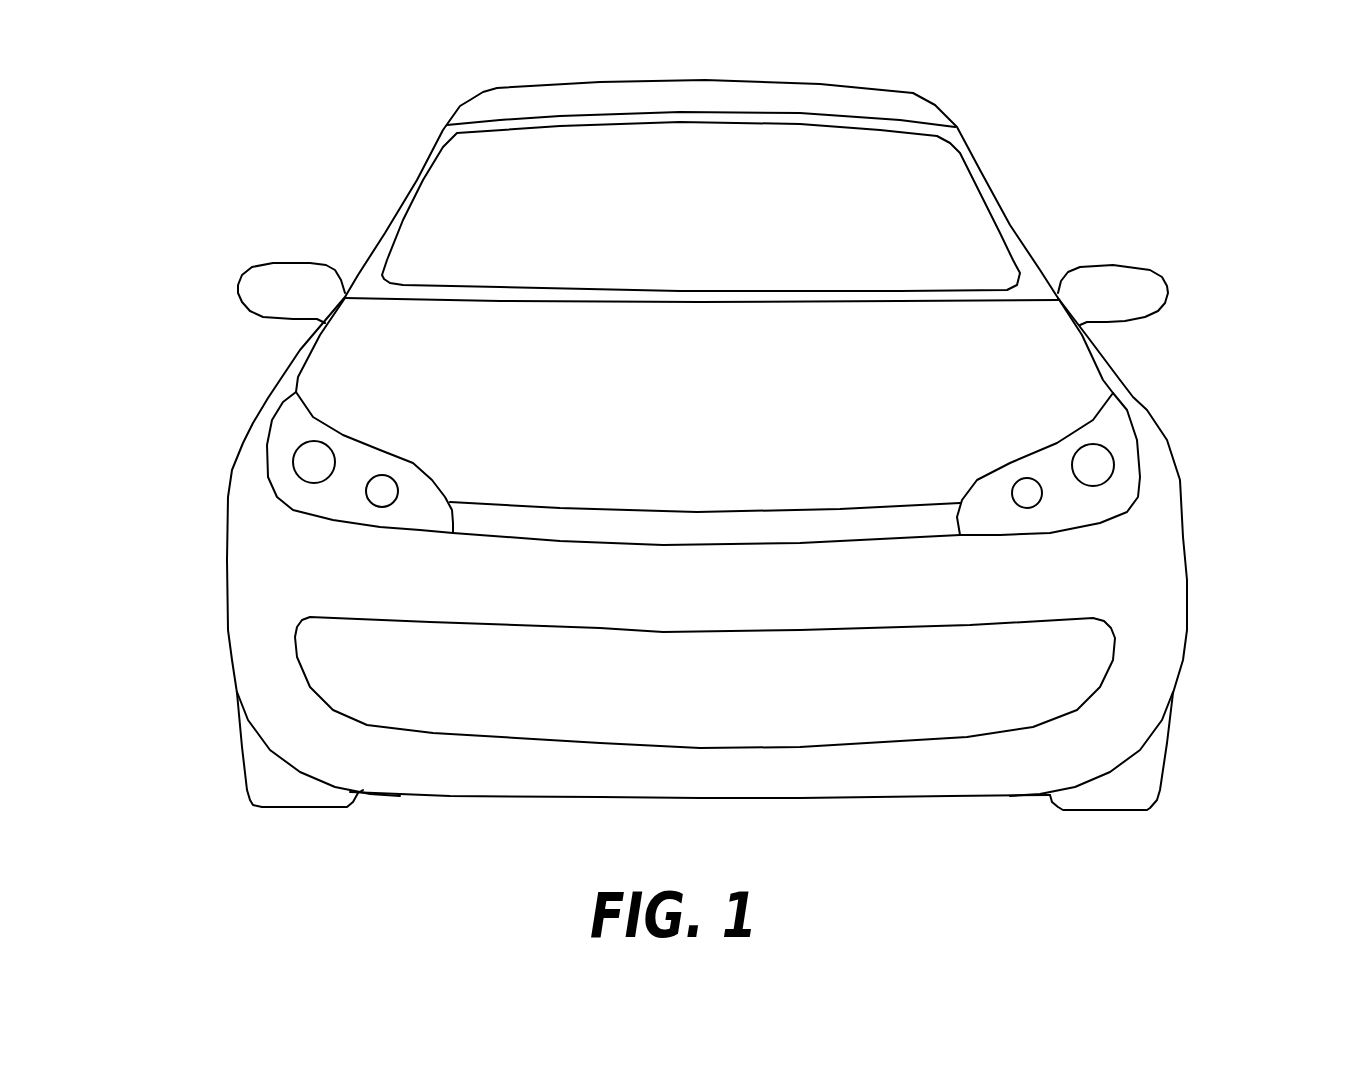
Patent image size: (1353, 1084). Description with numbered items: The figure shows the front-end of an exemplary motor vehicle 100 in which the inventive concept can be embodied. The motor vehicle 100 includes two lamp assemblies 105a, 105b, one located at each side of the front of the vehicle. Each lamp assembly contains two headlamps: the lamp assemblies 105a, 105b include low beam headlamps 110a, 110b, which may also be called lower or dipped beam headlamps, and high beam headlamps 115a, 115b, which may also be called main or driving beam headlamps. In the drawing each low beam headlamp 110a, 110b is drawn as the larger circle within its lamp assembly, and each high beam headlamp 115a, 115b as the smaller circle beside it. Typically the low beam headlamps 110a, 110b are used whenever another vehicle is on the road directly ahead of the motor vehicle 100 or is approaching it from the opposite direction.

The motor vehicle 100 is at (707, 436).
The lamp assembly 105a is at (285, 454).
The lamp assembly 105b is at (1106, 453).
The low beam headlamp 110a is at (213, 478).
The low beam headlamp 110b is at (1193, 475).
The high beam headlamp 115a is at (255, 542).
The high beam headlamp 115b is at (1151, 547).